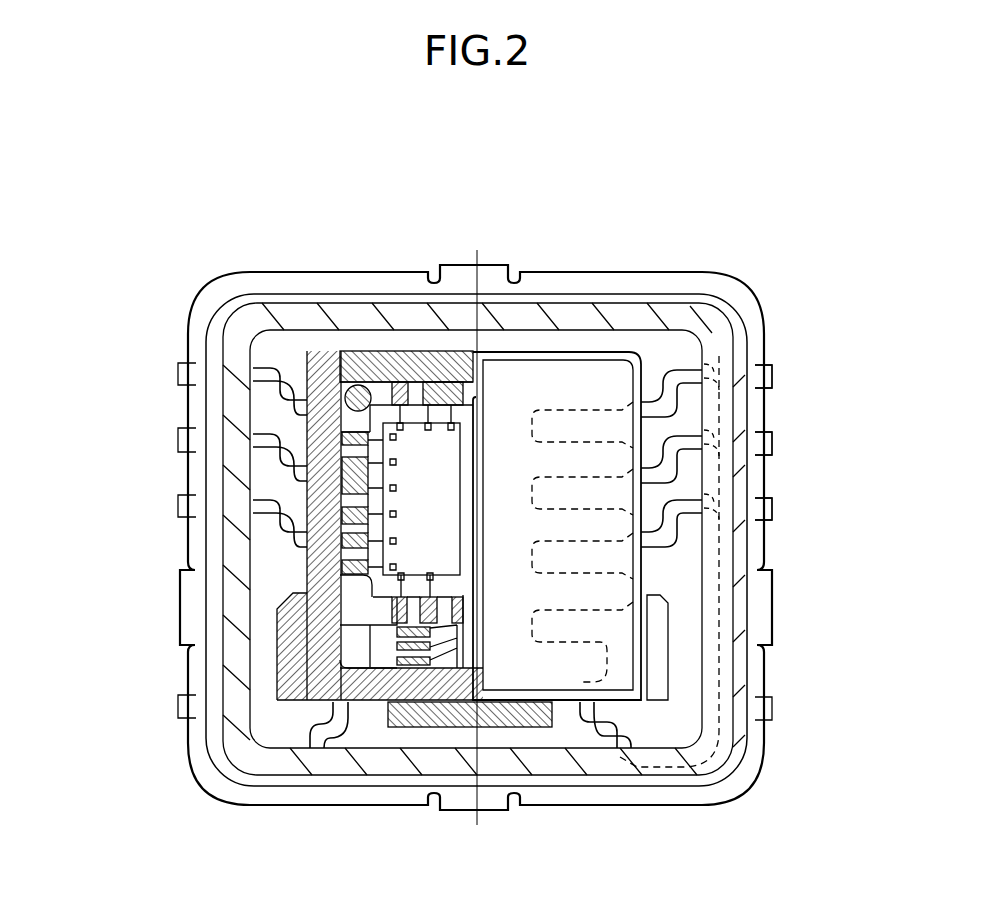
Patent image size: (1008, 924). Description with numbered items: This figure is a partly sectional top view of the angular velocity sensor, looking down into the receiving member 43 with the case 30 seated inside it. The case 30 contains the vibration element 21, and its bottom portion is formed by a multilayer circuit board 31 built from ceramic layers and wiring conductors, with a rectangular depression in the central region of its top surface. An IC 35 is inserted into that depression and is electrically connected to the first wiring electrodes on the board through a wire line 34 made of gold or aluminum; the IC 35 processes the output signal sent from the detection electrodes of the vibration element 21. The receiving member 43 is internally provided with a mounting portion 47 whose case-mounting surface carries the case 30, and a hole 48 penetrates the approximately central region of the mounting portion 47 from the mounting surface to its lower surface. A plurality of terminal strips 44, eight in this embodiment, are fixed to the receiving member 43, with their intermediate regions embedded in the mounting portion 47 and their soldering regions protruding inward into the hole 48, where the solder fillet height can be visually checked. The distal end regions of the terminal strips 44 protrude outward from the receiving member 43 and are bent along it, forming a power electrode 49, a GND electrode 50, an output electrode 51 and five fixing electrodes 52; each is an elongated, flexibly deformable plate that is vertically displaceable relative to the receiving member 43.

The vibration element 21 is at (470, 573).
The case 30 is at (318, 496).
The multilayer circuit board 31 is at (368, 618).
The wire line 34 is at (373, 428).
The IC 35 is at (413, 545).
The receiving member 43 is at (237, 418).
The terminal strips 44 is at (677, 372).
The mounting portion 47 is at (437, 362).
The hole 48 is at (383, 405).
The power electrode 49 is at (773, 375).
The GND electrode 50 is at (773, 507).
The output electrode 51 is at (773, 442).
The fixing electrodes 52 is at (183, 370).